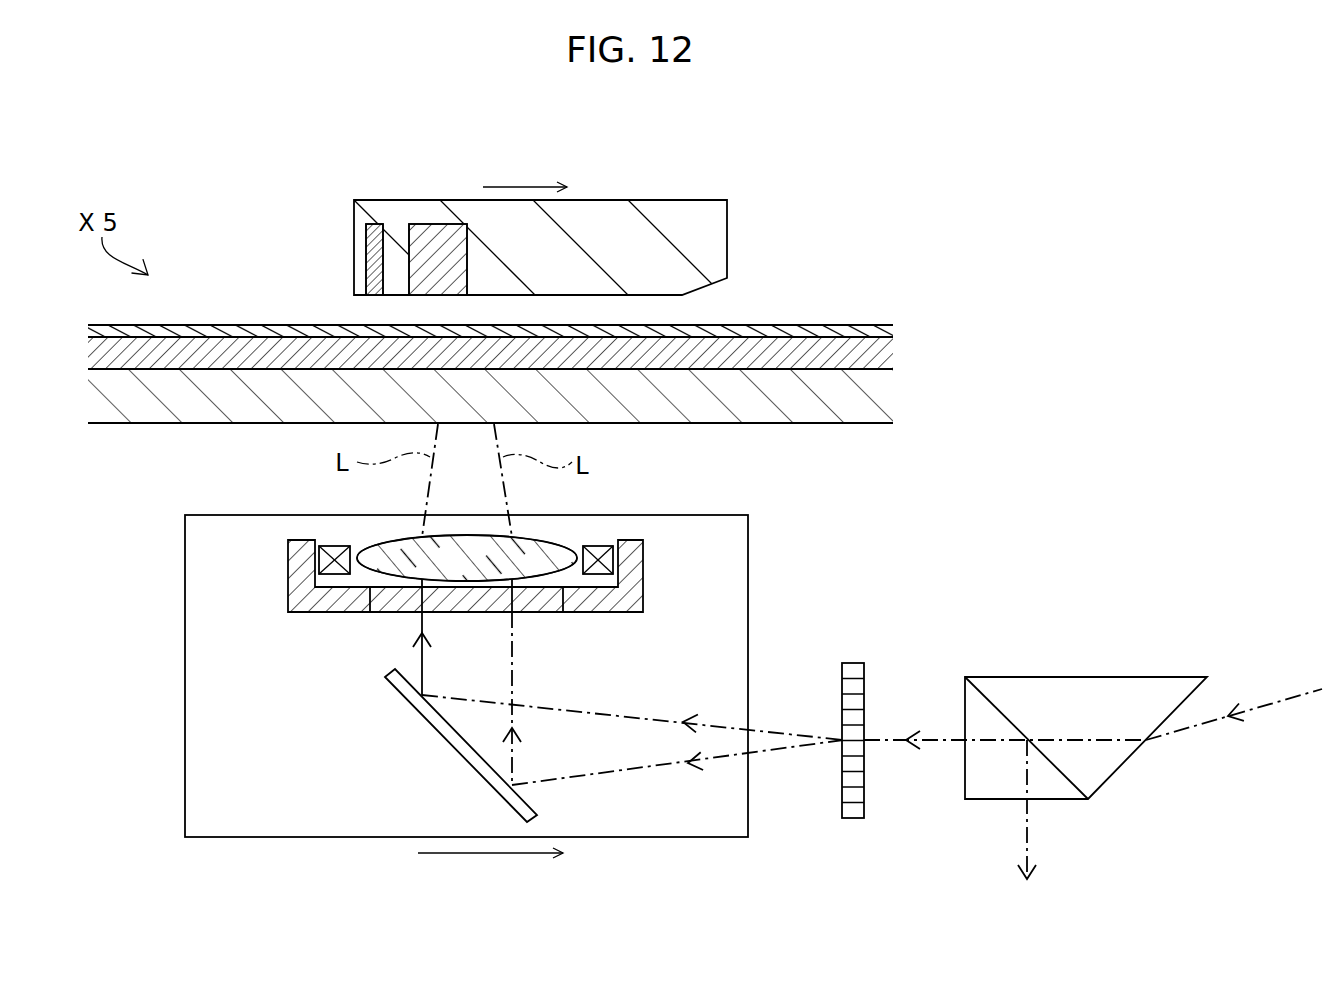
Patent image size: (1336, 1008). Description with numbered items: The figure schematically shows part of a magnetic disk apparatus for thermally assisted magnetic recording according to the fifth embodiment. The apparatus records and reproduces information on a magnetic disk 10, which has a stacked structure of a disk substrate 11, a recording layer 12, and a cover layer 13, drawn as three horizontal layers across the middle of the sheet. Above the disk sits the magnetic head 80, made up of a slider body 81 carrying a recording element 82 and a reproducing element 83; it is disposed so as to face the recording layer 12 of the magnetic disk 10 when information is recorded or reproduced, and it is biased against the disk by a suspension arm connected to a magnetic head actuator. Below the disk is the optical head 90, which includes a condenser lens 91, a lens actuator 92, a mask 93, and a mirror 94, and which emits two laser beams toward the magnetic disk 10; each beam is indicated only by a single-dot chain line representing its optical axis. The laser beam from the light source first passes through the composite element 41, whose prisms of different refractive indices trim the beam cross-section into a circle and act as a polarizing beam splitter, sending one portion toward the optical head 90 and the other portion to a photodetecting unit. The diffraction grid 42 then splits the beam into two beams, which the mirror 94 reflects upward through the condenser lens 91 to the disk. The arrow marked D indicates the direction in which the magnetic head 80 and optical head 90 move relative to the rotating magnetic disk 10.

The magnetic disk 10 is at (519, 330).
The disk substrate 11 is at (880, 392).
The recording layer 12 is at (883, 352).
The cover layer 13 is at (882, 330).
The composite element 41 is at (1108, 688).
The diffraction grid 42 is at (852, 672).
The magnetic head 80 is at (524, 224).
The slider body 81 is at (707, 216).
The recording element 82 is at (453, 245).
The reproducing element 83 is at (366, 245).
The optical head 90 is at (416, 678).
The condenser lens 91 is at (390, 552).
The lens actuator 92 is at (332, 550).
The mask 93 is at (325, 602).
The mirror 94 is at (435, 717).